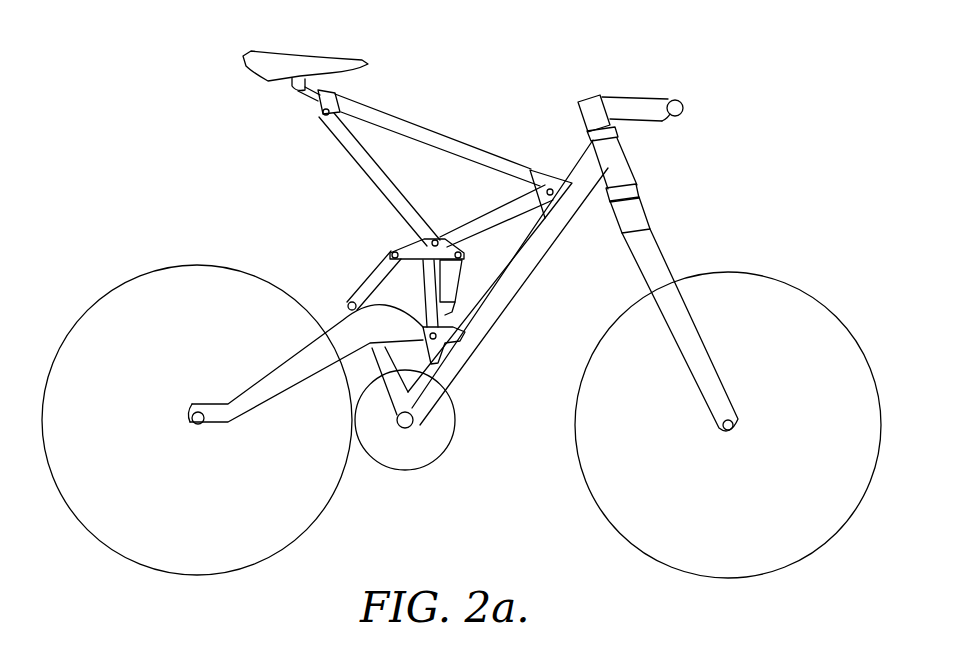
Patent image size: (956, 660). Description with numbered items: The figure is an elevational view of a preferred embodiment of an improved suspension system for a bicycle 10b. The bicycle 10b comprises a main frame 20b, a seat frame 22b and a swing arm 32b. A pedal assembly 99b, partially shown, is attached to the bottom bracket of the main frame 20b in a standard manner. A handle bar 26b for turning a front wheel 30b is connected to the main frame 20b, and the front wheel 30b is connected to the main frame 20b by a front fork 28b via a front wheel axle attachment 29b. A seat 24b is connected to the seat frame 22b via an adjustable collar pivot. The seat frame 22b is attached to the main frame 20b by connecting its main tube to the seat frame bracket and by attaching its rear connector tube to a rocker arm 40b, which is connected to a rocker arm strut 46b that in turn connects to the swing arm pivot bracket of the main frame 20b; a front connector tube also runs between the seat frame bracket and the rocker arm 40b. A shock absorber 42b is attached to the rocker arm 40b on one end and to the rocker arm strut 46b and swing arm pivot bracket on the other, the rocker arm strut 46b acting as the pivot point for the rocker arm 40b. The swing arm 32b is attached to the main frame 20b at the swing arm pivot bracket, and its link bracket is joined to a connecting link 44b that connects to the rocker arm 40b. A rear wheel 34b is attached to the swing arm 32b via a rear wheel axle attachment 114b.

The bicycle 10b is at (726, 161).
The main frame 20b is at (503, 355).
The seat frame 22b is at (488, 182).
The seat 24b is at (292, 53).
The handle bar 26b is at (628, 97).
The front fork 28b is at (702, 358).
The front wheel axle attachment 29b is at (737, 423).
The front wheel 30b is at (787, 281).
The swing arm 32b is at (270, 336).
The rear wheel 34b is at (117, 287).
The rocker arm 40b is at (400, 240).
The shock absorber 42b is at (455, 290).
The connecting link 44b is at (423, 293).
The rocker arm strut 46b is at (383, 277).
The pedal assembly 99b is at (406, 456).
The rear wheel axle attachment 114b is at (190, 420).